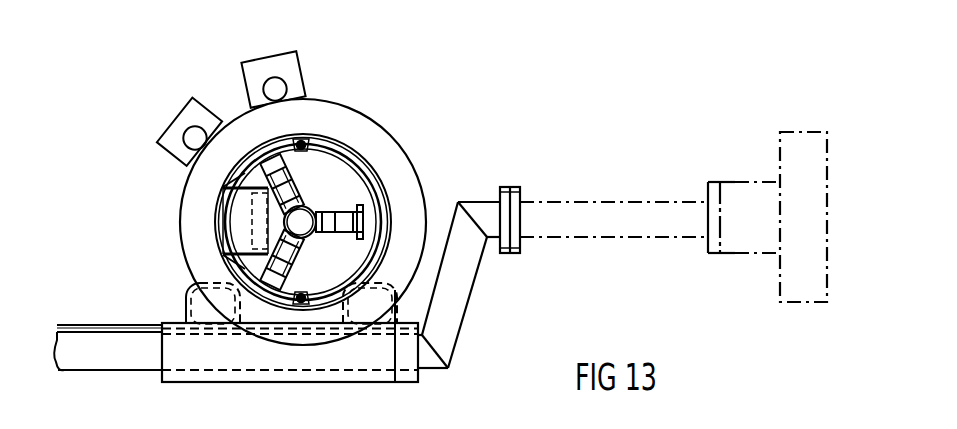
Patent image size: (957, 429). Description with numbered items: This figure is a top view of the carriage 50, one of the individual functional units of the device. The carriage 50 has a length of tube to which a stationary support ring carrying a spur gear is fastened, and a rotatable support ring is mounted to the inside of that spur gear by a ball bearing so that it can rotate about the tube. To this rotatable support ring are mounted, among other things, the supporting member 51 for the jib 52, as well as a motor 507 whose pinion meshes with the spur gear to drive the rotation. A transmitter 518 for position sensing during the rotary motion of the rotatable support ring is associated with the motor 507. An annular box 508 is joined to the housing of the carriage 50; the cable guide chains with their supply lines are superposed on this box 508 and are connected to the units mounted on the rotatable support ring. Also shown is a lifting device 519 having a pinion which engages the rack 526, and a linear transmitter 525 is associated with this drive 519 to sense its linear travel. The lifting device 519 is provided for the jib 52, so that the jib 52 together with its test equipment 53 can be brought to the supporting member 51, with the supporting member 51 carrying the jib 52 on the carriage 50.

The carriage 50 is at (363, 115).
The supporting member 51 is at (350, 355).
The jib 52 is at (463, 288).
The test equipment 53 is at (765, 237).
The motor 507 is at (183, 118).
The annular box 508 is at (397, 152).
The transmitter 518 is at (282, 67).
The lifting device 519 is at (203, 307).
The linear transmitter 525 is at (395, 383).
The rack 526 is at (120, 325).